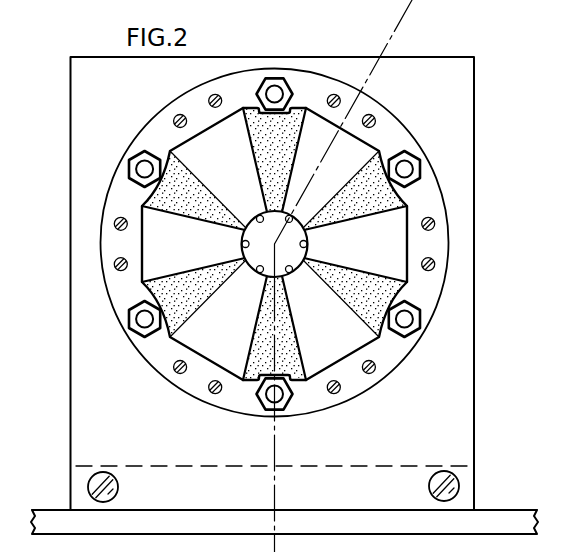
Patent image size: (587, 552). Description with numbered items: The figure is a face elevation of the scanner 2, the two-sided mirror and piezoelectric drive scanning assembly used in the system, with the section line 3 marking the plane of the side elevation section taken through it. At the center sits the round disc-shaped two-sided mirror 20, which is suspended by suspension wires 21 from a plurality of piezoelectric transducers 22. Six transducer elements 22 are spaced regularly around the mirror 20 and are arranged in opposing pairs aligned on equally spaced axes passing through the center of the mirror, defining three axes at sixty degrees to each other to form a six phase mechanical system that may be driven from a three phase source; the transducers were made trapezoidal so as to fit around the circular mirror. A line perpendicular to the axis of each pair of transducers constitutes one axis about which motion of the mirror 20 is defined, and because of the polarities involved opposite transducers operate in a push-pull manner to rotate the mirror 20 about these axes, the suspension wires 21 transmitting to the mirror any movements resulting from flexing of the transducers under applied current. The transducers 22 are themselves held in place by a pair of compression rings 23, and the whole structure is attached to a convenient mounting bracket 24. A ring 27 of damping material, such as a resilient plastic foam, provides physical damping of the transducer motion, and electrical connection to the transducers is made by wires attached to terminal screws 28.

The scanner 2 is at (63, 416).
The section line 3- 3 is at (413, 14).
The two-sided mirror 20 is at (275, 252).
The suspension wires 21 is at (259, 216).
The piezoelectric transducers 22 is at (380, 255).
The compression rings 23 is at (187, 383).
The mounting bracket 24 is at (462, 405).
The ring of damping material 27 is at (288, 150).
The terminal screws 28 is at (208, 97).